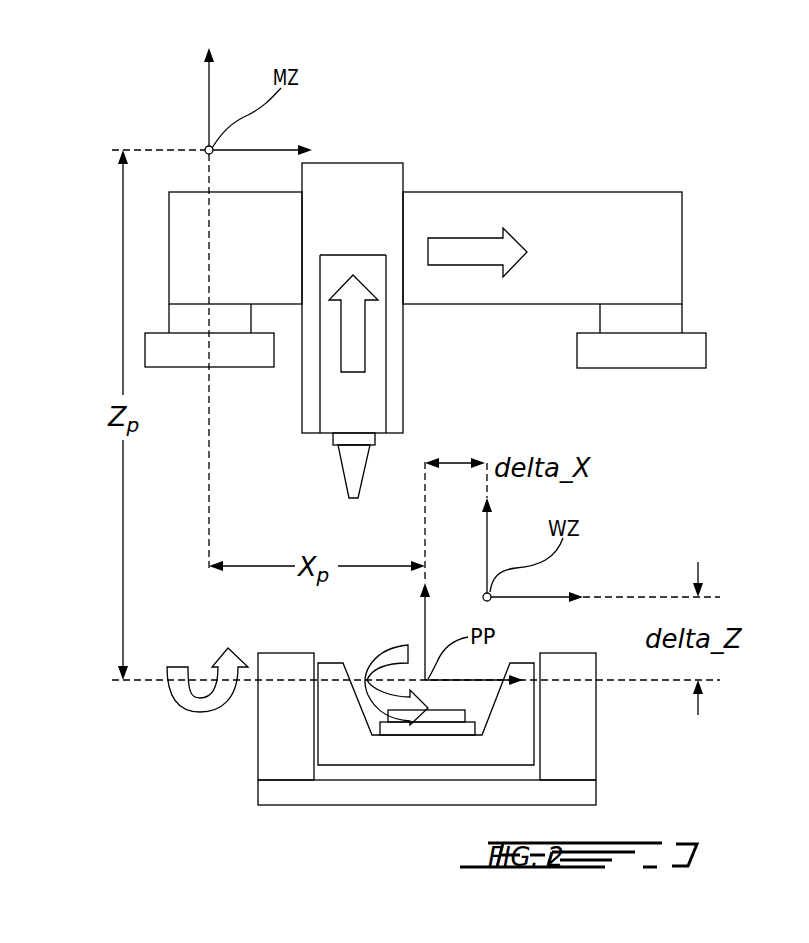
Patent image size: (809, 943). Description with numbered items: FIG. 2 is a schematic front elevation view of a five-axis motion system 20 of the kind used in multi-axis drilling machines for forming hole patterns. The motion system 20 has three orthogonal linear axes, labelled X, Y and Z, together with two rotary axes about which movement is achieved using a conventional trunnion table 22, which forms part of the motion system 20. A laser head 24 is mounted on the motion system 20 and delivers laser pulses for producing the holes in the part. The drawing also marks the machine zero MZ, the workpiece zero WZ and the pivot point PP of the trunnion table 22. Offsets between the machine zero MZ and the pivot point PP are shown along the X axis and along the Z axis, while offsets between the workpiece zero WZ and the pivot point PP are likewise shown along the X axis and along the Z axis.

The motion system 20 is at (460, 151).
The trunnion table 22 is at (212, 742).
The laser head 24 is at (355, 470).